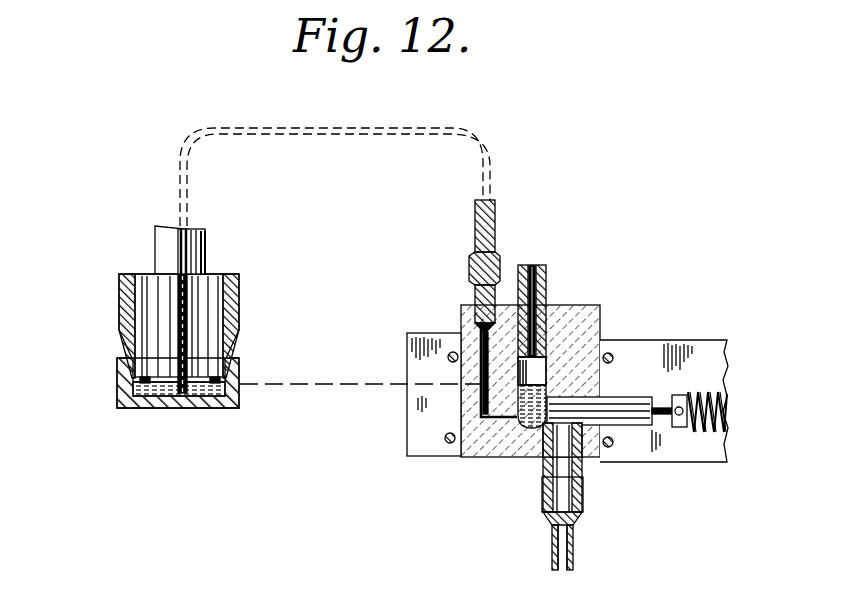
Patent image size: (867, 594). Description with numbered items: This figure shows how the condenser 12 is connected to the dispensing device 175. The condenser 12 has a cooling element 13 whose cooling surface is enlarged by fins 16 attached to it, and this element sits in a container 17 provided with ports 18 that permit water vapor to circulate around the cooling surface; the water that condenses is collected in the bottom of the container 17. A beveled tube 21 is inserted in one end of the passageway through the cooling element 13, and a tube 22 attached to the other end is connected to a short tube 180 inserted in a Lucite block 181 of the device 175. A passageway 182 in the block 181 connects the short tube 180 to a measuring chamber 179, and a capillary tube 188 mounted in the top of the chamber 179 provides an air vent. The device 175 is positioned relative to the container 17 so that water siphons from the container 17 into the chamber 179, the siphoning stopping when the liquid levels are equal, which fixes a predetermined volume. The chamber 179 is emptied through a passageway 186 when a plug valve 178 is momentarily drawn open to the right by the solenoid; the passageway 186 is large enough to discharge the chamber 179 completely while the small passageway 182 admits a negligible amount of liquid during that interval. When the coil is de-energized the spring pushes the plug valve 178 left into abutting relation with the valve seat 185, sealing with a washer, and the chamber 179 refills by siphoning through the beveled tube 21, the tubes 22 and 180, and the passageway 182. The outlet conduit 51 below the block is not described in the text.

The condenser 12 is at (207, 423).
The cooling element 13 is at (207, 243).
The fins 16 is at (212, 275).
The container 17 is at (119, 298).
The ports 18 is at (134, 366).
The beveled tube 21 is at (160, 410).
The tube 22 is at (379, 130).
The outlet pipe 51 is at (552, 550).
The device 175 is at (628, 466).
The plug valve 178 is at (617, 398).
The measuring chamber 179 is at (515, 378).
The short tube 180 is at (475, 298).
The Lucite block 181 is at (600, 320).
The passageway 182 is at (478, 343).
The valve seat 185 is at (549, 393).
The passageway 186 is at (535, 432).
The capillary tube 188 is at (547, 283).